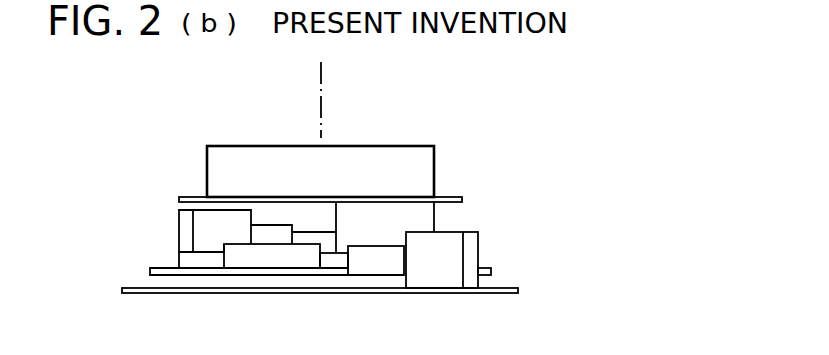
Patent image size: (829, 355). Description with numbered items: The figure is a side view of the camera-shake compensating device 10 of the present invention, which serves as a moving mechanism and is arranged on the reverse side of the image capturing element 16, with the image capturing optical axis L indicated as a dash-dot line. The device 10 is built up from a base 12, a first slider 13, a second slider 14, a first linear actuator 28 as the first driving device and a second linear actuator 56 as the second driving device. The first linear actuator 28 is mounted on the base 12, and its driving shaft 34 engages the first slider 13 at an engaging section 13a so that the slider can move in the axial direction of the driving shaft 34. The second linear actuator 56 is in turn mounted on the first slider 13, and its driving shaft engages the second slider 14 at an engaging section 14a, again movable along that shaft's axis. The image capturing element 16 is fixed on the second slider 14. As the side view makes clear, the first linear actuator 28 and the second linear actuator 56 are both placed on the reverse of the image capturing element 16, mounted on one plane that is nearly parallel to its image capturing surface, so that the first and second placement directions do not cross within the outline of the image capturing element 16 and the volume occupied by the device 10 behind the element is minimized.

The camera-shake compensating device 10 is at (510, 143).
The base 12 is at (518, 290).
The first slider 13 is at (150, 270).
The engaging section 13a is at (278, 258).
The second slider 14 is at (452, 197).
The engaging section 14a is at (392, 218).
The image capturing element 16 is at (345, 145).
The first linear actuator 28 is at (457, 232).
The driving shaft 34 is at (337, 262).
The second linear actuator 56 is at (202, 234).
The image capturing optical axis L is at (321, 90).